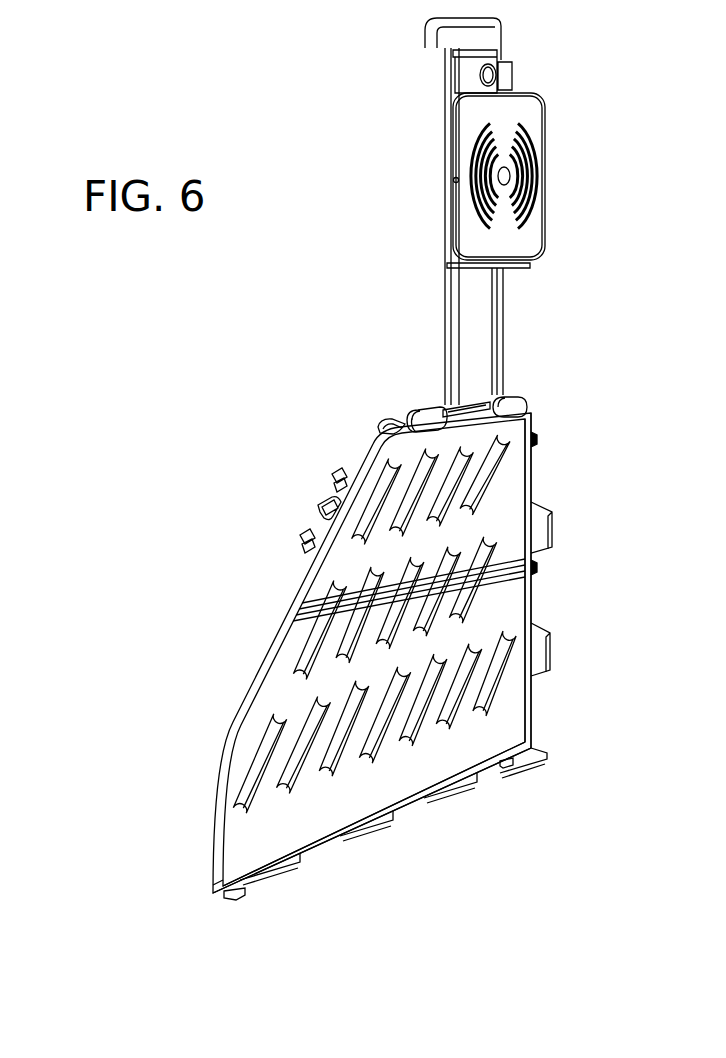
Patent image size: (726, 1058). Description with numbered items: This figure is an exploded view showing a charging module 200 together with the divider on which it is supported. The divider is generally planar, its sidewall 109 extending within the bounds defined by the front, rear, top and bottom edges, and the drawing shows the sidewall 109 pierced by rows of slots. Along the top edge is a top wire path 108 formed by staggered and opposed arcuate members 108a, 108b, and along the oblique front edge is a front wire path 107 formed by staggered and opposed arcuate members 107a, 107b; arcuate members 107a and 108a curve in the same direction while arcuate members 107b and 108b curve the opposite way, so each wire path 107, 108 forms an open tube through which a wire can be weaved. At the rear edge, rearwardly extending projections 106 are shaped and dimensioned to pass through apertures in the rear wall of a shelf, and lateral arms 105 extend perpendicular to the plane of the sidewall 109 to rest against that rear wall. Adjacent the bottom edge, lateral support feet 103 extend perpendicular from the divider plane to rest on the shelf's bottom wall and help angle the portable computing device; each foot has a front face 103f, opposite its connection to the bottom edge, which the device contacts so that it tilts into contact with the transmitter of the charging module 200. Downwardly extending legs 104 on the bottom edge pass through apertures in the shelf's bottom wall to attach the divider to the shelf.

The charging module 200 is at (560, 157).
The top wire path 108 is at (460, 349).
The arcuate member 108a is at (382, 422).
The arcuate member 108b is at (423, 420).
The front wire path 107 is at (246, 496).
The arcuate member 107a is at (337, 468).
The arcuate member 107b is at (320, 507).
The rearwardly extending projection 106 is at (535, 442).
The lateral arm 105 is at (543, 523).
The sidewall 109 is at (532, 703).
The lateral support foot 103 is at (537, 747).
The front face 103f is at (542, 757).
The leg 104 is at (510, 765).